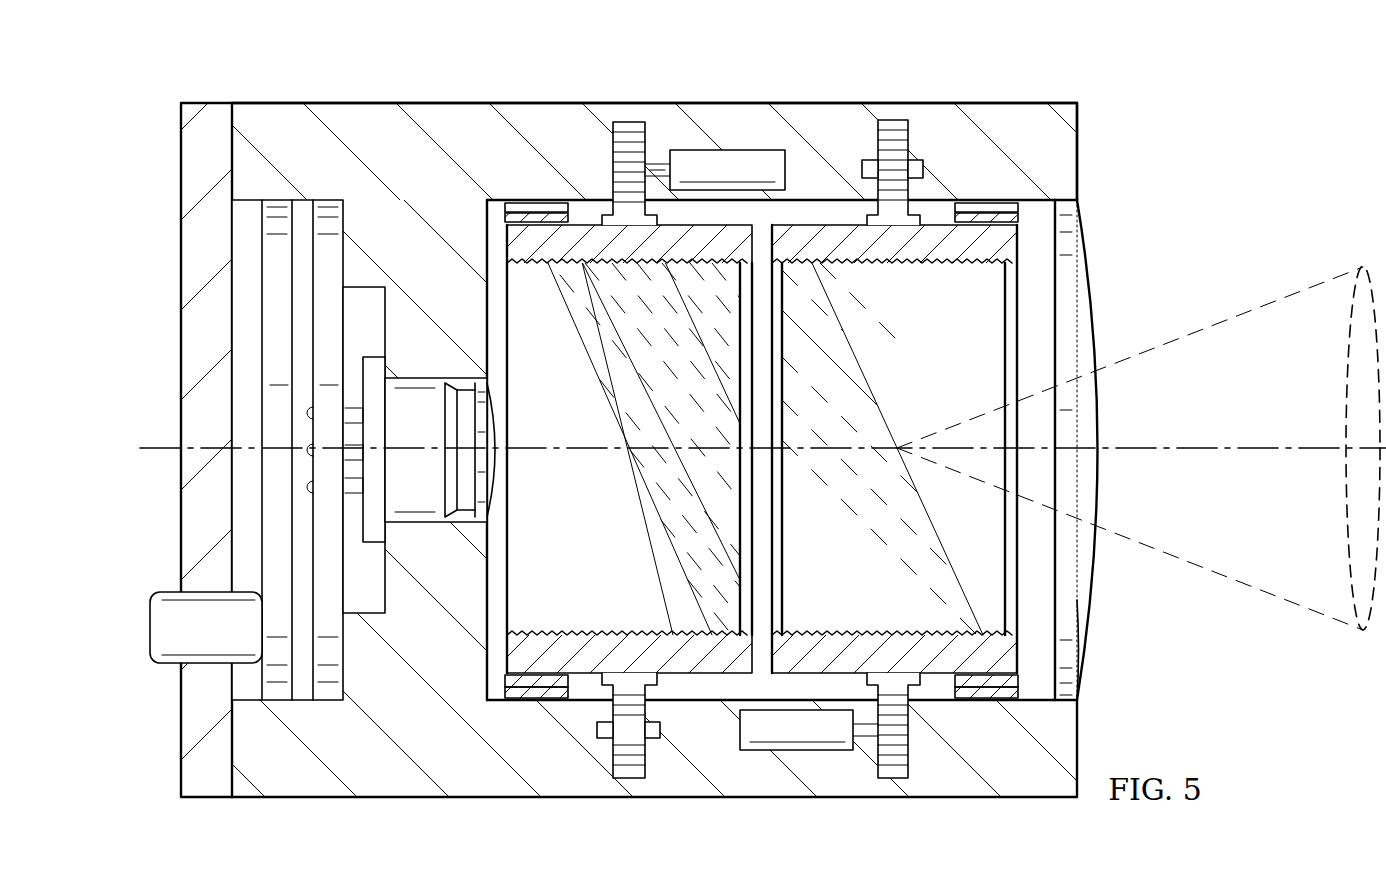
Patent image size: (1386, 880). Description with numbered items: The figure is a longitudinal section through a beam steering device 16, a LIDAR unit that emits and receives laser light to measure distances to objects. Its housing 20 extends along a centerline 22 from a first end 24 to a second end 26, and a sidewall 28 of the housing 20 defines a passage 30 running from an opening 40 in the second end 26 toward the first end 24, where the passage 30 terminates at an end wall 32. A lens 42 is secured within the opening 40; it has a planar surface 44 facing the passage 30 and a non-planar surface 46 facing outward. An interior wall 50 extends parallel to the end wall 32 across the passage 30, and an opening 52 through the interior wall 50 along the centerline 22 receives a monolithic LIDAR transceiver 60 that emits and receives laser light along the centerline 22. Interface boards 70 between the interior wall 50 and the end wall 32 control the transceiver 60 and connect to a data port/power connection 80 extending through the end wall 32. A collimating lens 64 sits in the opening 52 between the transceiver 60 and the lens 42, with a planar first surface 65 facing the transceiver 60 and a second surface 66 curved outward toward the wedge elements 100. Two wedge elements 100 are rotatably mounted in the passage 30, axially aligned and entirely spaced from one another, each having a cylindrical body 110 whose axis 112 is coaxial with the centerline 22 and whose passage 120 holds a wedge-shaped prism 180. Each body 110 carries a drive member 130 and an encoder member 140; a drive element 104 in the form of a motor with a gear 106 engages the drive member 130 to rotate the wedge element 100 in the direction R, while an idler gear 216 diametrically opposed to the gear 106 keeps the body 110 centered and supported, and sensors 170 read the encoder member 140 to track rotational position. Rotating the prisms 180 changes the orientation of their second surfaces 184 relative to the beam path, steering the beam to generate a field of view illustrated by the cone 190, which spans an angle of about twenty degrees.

The beam steering device 16 is at (830, 78).
The housing 20 is at (590, 92).
The centerline 22 is at (1250, 448).
The first end 24 is at (183, 798).
The second end 26 is at (1086, 98).
The sidewall 28 is at (497, 798).
The passage 30 is at (683, 682).
The end wall 32 is at (181, 110).
The opening 40 is at (1082, 206).
The lens 42 is at (1094, 316).
The planar surface 44 is at (1053, 588).
The non-planar surface 46 is at (1094, 600).
The interior wall 50 is at (404, 678).
The opening 52 is at (463, 404).
The monolithic LIDAR transceiver 60 is at (430, 460).
The collimating lens 64 is at (497, 478).
The planar first surface 65 is at (470, 525).
The second surface 66 is at (497, 446).
The interface boards 70 is at (275, 345).
The data port/power connection 80 is at (173, 665).
The wedge element 100 is at (503, 236).
The drive element 104 is at (735, 150).
The gear 106 is at (628, 120).
The cylindrical body 110 is at (556, 640).
The axis 112 is at (763, 422).
The passage 120 is at (655, 550).
The drive member 130 is at (616, 228).
The encoder member 140 is at (522, 216).
The sensors 170 is at (548, 210).
The wedge-shaped prism 180 is at (652, 371).
The second surface 184 is at (645, 497).
The cone 190 is at (1300, 292).
The idler gear 216 is at (895, 120).